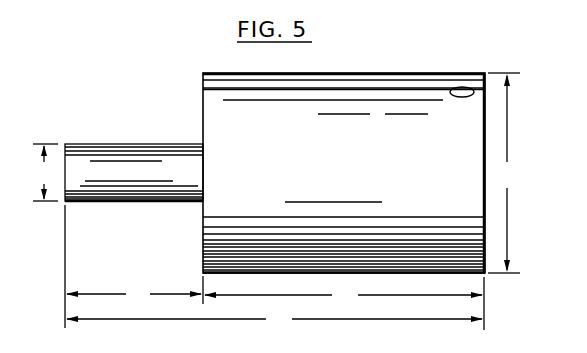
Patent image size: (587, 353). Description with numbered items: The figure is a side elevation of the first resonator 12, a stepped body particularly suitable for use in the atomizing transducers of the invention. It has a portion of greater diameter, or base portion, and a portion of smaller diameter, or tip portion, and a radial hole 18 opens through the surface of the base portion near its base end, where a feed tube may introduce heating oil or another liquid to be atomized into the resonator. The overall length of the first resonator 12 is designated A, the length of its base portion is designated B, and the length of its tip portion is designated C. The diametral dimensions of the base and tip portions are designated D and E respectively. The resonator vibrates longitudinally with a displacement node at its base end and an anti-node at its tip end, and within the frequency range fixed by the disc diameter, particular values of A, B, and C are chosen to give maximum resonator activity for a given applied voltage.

The first resonator 12 is at (184, 90).
The radial hole 18 is at (458, 67).
The overall length A is at (274, 319).
The base portion length B is at (344, 303).
The tip portion length C is at (134, 266).
The base portion diameter D is at (504, 173).
The tip portion diameter E is at (45, 172).